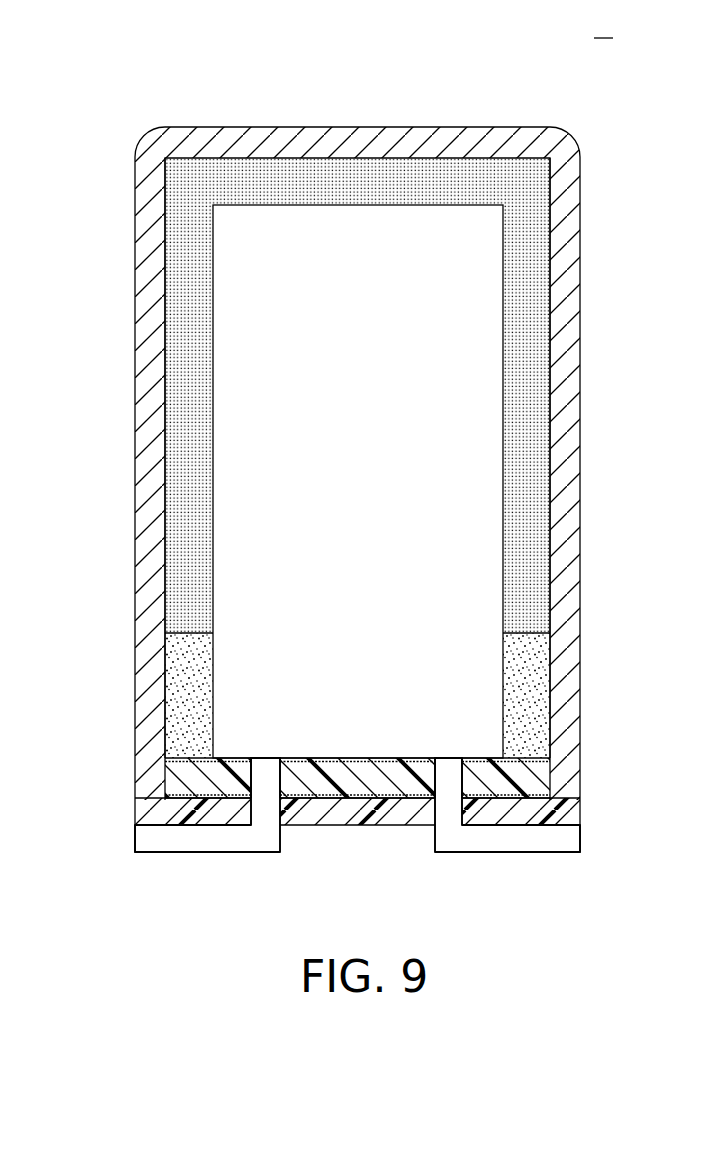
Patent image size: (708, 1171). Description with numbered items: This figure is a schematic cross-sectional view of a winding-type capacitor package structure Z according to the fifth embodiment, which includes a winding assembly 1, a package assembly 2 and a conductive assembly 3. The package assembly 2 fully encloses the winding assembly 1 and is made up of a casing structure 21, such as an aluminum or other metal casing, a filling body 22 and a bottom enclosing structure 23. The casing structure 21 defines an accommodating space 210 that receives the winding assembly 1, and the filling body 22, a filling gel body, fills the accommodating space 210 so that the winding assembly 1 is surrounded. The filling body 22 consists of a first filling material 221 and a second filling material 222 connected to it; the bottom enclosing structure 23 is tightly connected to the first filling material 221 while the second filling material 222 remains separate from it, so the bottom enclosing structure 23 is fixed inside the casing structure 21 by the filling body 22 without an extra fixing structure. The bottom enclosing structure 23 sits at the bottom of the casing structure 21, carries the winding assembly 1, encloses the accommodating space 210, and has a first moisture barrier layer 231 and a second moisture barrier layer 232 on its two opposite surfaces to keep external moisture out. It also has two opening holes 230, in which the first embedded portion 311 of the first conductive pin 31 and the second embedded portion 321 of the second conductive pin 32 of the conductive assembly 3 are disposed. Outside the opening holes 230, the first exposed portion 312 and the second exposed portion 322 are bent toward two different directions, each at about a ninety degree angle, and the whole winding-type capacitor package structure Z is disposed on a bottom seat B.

The winding assembly 1 is at (500, 386).
The package assembly 2 is at (133, 277).
The casing structure 21 is at (152, 393).
The accommodating space 210 is at (152, 466).
The filling body 22 is at (53, 565).
The first filling material 221 is at (185, 668).
The second filling material 222 is at (185, 575).
The bottom enclosing structure 23 is at (190, 786).
The opening holes 230 is at (292, 771).
The first moisture barrier layer 231 is at (523, 760).
The second moisture barrier layer 232 is at (530, 800).
The conductive assembly 3 is at (100, 20).
The first conductive pin 31 is at (282, 902).
The first embedded portion 311 is at (266, 800).
The first exposed portion 312 is at (192, 835).
The second conductive pin 32 is at (545, 902).
The second embedded portion 321 is at (447, 800).
The second exposed portion 322 is at (525, 835).
The bottom seat B is at (133, 814).
The winding-type capacitor package structure Z is at (604, 23).